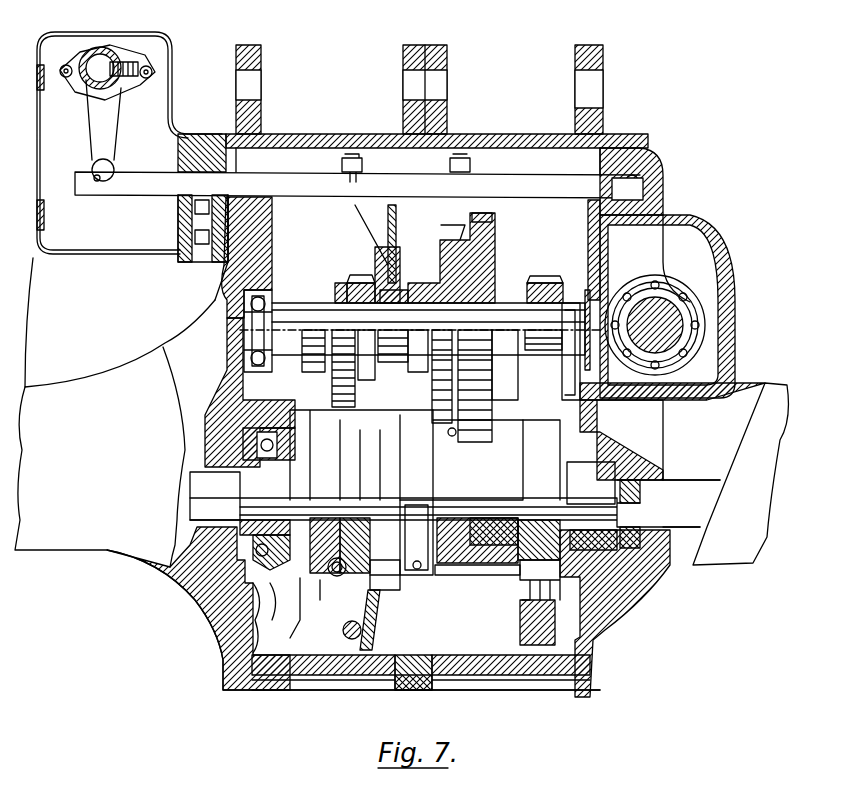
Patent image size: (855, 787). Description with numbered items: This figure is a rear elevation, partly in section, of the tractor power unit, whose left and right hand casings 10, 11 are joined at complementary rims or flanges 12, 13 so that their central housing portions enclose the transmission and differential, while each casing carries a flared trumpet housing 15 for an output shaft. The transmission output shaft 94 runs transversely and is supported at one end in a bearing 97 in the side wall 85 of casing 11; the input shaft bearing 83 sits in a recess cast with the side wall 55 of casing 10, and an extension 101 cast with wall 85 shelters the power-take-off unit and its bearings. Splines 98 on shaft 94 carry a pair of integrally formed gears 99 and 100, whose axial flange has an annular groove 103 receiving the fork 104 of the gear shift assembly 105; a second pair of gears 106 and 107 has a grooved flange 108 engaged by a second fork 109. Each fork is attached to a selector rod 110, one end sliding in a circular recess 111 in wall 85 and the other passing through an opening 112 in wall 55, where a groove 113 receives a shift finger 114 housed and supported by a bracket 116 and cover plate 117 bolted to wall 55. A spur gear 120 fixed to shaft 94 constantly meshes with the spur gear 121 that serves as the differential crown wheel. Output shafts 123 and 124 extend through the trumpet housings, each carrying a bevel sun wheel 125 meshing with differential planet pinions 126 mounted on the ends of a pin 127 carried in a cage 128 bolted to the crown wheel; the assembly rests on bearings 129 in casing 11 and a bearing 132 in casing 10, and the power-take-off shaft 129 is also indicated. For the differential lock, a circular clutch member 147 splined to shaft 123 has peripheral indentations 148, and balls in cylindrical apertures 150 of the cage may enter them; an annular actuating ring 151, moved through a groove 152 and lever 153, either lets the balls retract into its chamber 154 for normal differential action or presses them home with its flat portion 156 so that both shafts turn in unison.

The left hand casing 10 is at (312, 134).
The right hand casing 11 is at (488, 134).
The rim or flange 12 is at (400, 692).
The rim or flange 13 is at (432, 692).
The trumpet housing 15 is at (92, 515).
The side wall 55 is at (222, 270).
The bearing 83 is at (222, 386).
The side wall 85 is at (600, 240).
The output shaft 94 is at (296, 336).
The bearing 97 is at (590, 368).
The splines 98 is at (318, 372).
The gear 99 is at (350, 280).
The gear 100 is at (333, 396).
The extension 101 is at (655, 228).
The annular groove 103 is at (345, 252).
The fork 104 is at (358, 214).
The gear shift assembly 105 is at (180, 116).
The gear 106 is at (445, 238).
The gear 107 is at (495, 222).
The grooved flange 108 is at (420, 360).
The second fork 109 is at (452, 208).
The selector rod 110 is at (128, 195).
The circular recess 111 is at (628, 177).
The opening 112 is at (255, 178).
The groove 113 is at (99, 184).
The shift finger 114 is at (103, 134).
The bracket 116 is at (90, 304).
The cover plate 117 is at (37, 150).
The spur gear 120 is at (544, 276).
The spur gear (crown wheel) 121 is at (522, 636).
The output shaft 123 is at (232, 499).
The output shaft 124 is at (692, 513).
The bevel sun wheel 125 is at (412, 548).
The differential planet pinion 126 is at (438, 578).
The pin 127 is at (410, 503).
The cage 128 is at (293, 562).
The bearings 129 is at (641, 290).
The bearing 132 is at (270, 575).
The circular clutch member 147 is at (322, 515).
The indentations 148 is at (350, 518).
The cylindrical apertures 150 is at (330, 578).
The annular actuating ring 151 is at (420, 550).
The groove 152 is at (338, 605).
The lever 153 is at (377, 620).
The chamber 154 is at (372, 595).
The flat portion 156 is at (388, 580).